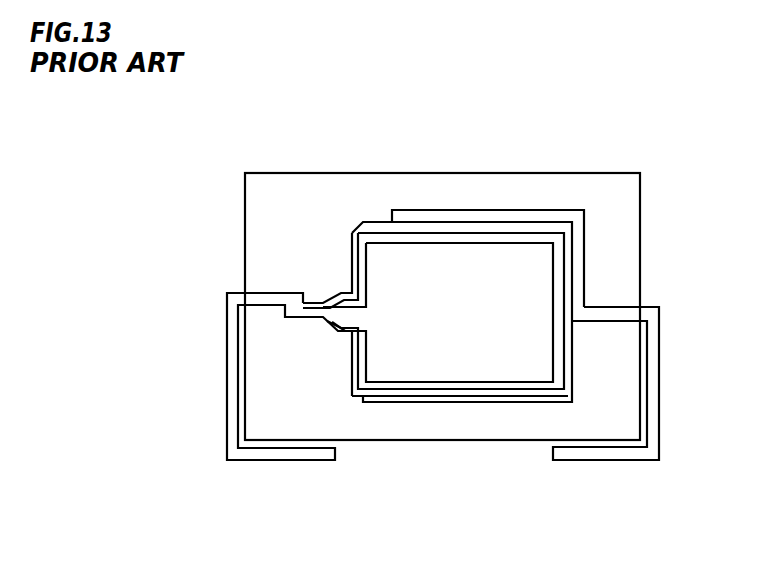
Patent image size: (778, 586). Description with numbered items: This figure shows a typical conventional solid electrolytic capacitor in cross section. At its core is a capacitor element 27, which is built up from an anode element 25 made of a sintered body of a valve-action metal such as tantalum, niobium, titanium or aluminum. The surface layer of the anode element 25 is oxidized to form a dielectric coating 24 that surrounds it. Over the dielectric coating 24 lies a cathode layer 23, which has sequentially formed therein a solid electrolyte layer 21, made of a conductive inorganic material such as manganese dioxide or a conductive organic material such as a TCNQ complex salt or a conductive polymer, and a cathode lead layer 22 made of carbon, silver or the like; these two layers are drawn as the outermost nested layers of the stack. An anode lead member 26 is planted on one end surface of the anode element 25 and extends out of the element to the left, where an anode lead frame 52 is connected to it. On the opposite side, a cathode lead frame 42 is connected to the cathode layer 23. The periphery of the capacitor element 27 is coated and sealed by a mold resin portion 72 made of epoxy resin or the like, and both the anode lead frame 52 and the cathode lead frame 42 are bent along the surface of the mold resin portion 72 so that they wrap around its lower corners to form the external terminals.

The solid electrolyte layer 21 is at (532, 398).
The cathode lead layer 22 is at (490, 393).
The cathode layer 23 is at (552, 502).
The dielectric coating 24 is at (440, 386).
The anode element 25 is at (395, 358).
The anode lead member 26 is at (300, 316).
The capacitor element 27 is at (462, 265).
The cathode lead frame 42 is at (653, 384).
The anode lead frame 52 is at (232, 393).
The mold resin portion 72 is at (620, 238).